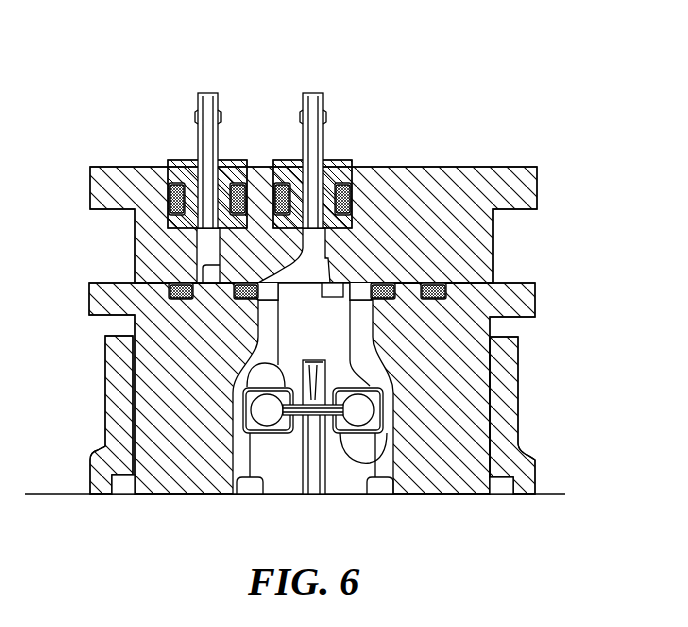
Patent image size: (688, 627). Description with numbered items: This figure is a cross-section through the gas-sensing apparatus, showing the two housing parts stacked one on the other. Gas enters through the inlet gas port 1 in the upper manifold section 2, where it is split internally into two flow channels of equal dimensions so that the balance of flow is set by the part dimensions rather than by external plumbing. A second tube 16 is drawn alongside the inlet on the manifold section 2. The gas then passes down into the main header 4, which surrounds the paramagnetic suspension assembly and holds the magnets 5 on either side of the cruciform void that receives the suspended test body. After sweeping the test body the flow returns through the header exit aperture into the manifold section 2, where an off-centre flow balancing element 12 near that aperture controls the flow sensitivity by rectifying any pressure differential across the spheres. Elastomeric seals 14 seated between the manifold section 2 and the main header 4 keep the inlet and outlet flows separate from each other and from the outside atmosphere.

The inlet gas port 1 is at (210, 92).
The second connection tube 16 is at (315, 92).
The manifold section 2 is at (537, 192).
The main header 4 is at (537, 302).
The elastomeric seals 14 is at (433, 284).
The flow balancing element 12 is at (333, 298).
The magnets 5 is at (255, 378).